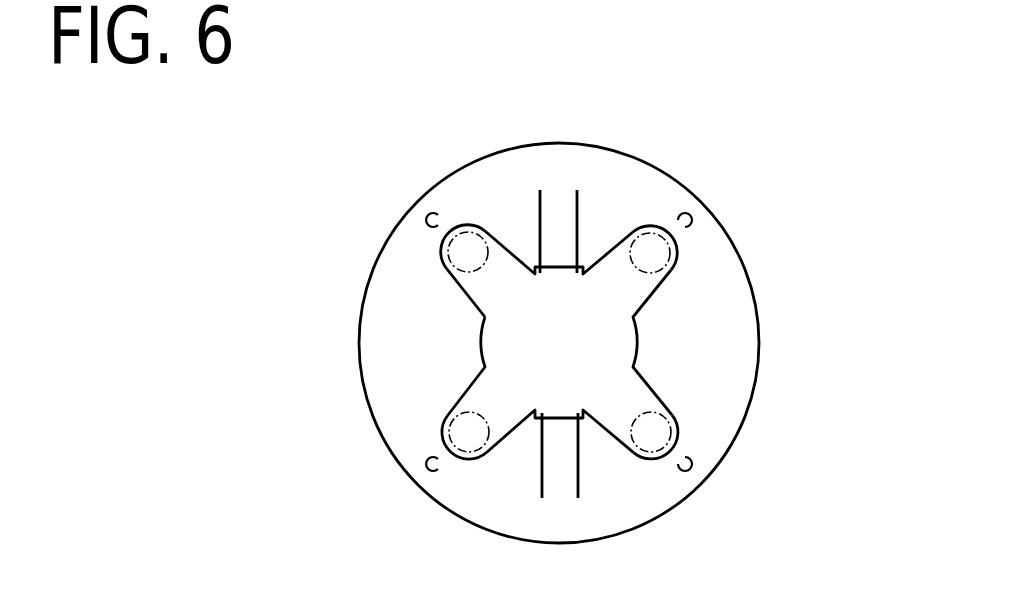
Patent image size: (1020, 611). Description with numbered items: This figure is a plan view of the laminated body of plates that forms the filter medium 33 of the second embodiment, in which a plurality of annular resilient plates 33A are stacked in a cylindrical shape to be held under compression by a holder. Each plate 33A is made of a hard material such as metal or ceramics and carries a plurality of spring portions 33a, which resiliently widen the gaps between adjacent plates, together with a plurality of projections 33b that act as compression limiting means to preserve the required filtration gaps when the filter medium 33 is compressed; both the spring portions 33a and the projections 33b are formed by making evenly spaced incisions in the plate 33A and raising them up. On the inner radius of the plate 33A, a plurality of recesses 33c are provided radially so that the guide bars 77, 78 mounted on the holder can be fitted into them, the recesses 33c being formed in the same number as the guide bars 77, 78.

The filter medium 33 is at (740, 268).
The annular resilient plate 33A is at (646, 343).
The spring portion 33a is at (558, 258).
The projection 33b is at (683, 215).
The recess 33c is at (677, 266).
The guide bar 77 is at (672, 412).
The guide bar 78 is at (646, 234).